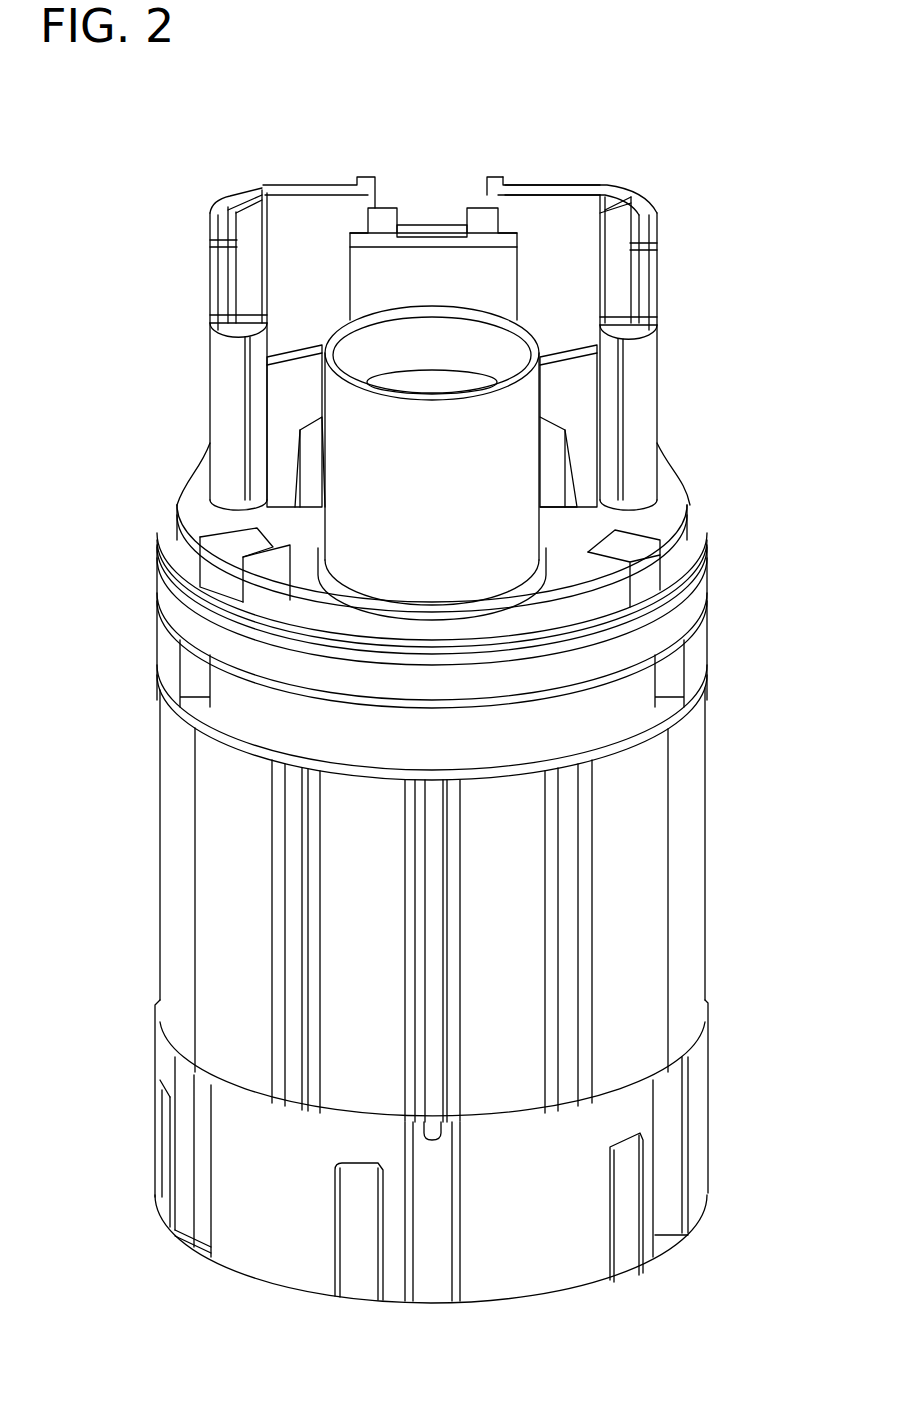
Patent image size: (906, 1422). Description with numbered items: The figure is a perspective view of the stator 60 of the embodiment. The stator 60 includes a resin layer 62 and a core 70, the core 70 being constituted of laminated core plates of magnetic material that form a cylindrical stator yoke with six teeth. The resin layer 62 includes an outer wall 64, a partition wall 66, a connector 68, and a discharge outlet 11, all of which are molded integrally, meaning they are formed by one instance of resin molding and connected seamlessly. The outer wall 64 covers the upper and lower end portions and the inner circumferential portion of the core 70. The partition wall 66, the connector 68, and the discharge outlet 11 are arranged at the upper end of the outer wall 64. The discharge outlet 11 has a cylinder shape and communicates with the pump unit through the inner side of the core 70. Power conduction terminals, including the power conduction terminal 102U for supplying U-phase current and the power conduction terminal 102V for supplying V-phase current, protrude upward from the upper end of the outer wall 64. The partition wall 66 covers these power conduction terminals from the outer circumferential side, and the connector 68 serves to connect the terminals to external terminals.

The stator 60 is at (688, 238).
The resin layer 62 is at (648, 517).
The outer wall 64 is at (290, 603).
The partition wall 66 is at (539, 205).
The connector 68 is at (428, 258).
The core 70 is at (648, 940).
The discharge outlet 11 is at (510, 470).
The power conduction terminal 102U is at (293, 390).
The power conduction terminal 102V is at (567, 390).